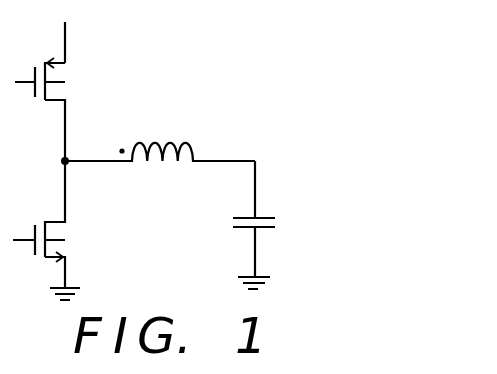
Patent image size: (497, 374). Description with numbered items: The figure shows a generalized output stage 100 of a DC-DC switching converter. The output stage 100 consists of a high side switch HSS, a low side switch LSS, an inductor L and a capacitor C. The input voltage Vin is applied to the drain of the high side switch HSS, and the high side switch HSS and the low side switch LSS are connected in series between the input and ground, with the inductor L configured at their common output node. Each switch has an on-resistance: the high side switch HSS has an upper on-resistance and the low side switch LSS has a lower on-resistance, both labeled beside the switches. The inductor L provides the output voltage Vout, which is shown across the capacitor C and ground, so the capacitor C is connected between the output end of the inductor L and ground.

The generalized output stage 100 is at (215, 33).
The input voltage VIN Vin is at (67, 31).
The high side switch HSS is at (73, 109).
The inductor L is at (160, 139).
The output voltage VOUT Vout is at (255, 177).
The capacitor C is at (261, 251).
The low side switch LSS is at (72, 230).